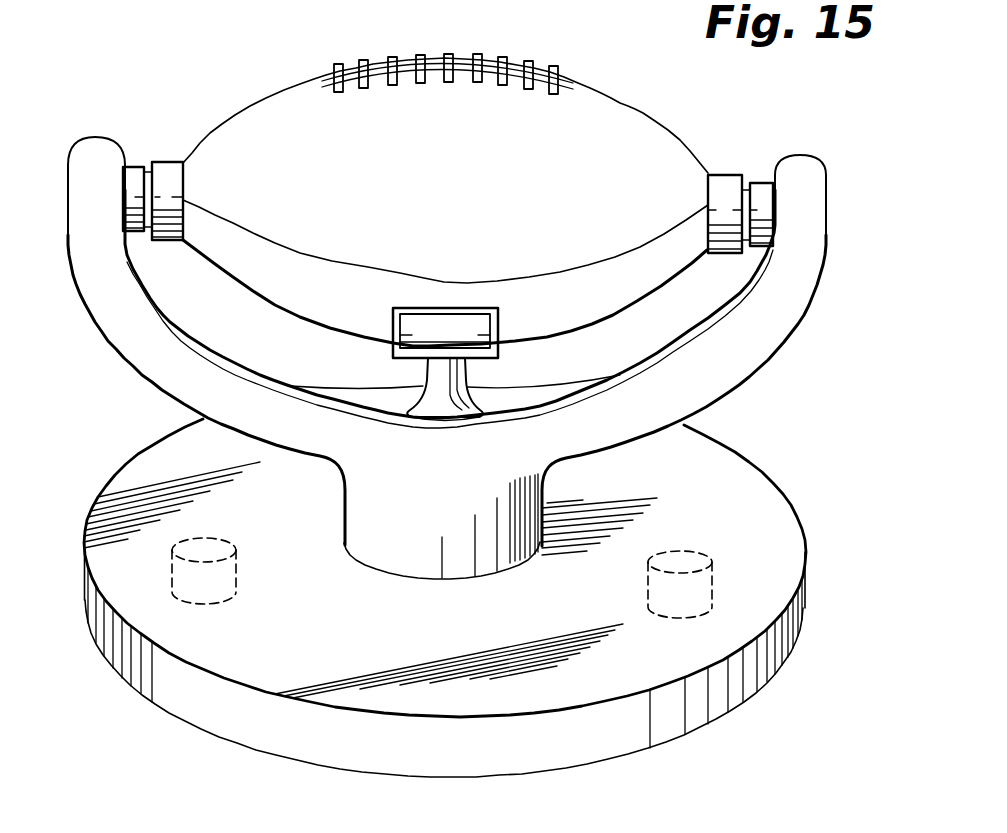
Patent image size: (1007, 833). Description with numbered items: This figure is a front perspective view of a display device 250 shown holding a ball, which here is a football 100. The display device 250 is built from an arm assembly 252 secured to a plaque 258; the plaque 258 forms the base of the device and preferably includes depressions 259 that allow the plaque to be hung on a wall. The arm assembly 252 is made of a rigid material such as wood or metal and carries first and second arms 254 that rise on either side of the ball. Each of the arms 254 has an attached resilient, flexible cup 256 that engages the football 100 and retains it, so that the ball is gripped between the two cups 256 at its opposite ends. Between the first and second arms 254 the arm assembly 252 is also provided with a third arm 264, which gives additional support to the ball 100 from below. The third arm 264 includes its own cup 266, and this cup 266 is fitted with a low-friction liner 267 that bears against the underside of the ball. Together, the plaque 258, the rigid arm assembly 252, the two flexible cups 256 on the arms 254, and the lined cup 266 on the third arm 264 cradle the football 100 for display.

The football 100 is at (648, 108).
The display device 250 is at (770, 420).
The arm assembly 252 is at (163, 392).
The first and second arms 254 is at (83, 177).
The flexible cup 256 is at (167, 160).
The plaque 258 is at (771, 503).
The depressions 259 is at (193, 600).
The third arm 264 is at (450, 378).
The cup 266 is at (437, 336).
The low-friction liner 267 is at (407, 301).